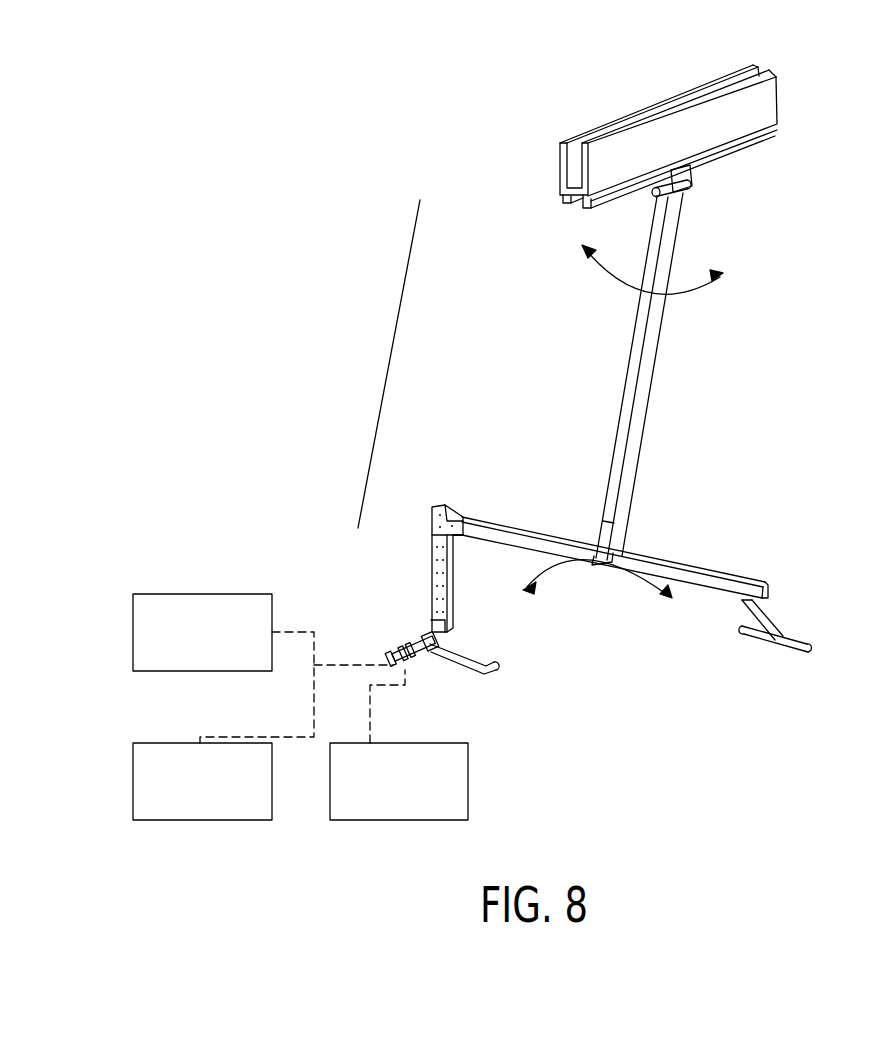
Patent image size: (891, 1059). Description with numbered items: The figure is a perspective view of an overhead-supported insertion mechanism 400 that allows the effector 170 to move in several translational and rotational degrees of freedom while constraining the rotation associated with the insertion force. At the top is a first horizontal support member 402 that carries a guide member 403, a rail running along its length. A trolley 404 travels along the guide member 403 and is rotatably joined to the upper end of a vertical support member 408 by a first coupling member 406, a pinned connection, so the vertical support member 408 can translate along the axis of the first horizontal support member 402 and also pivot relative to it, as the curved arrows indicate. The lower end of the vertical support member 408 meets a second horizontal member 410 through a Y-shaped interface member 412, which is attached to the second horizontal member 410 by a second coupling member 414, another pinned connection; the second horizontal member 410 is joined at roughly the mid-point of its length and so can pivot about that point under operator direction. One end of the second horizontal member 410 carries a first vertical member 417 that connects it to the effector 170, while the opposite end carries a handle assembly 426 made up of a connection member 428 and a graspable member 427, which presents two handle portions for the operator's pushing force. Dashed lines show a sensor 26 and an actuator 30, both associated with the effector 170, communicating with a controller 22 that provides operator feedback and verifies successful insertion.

The insertion mechanism 400 is at (458, 78).
The first horizontal support member 402 is at (695, 125).
The guide member 403 is at (770, 137).
The trolley 404 is at (690, 178).
The first coupling member 406 is at (683, 193).
The vertical support member 408 is at (640, 327).
The second horizontal member 410 is at (487, 523).
The interface member 412 is at (617, 530).
The second coupling member 414 is at (592, 562).
The first vertical member 417 is at (432, 558).
The effector 170 is at (398, 637).
The handle assembly 426 is at (808, 595).
The connection member 428 is at (773, 618).
The graspable member 427 is at (810, 647).
The sensor 26 is at (192, 649).
The actuator 30 is at (192, 797).
The controller 22 is at (389, 797).